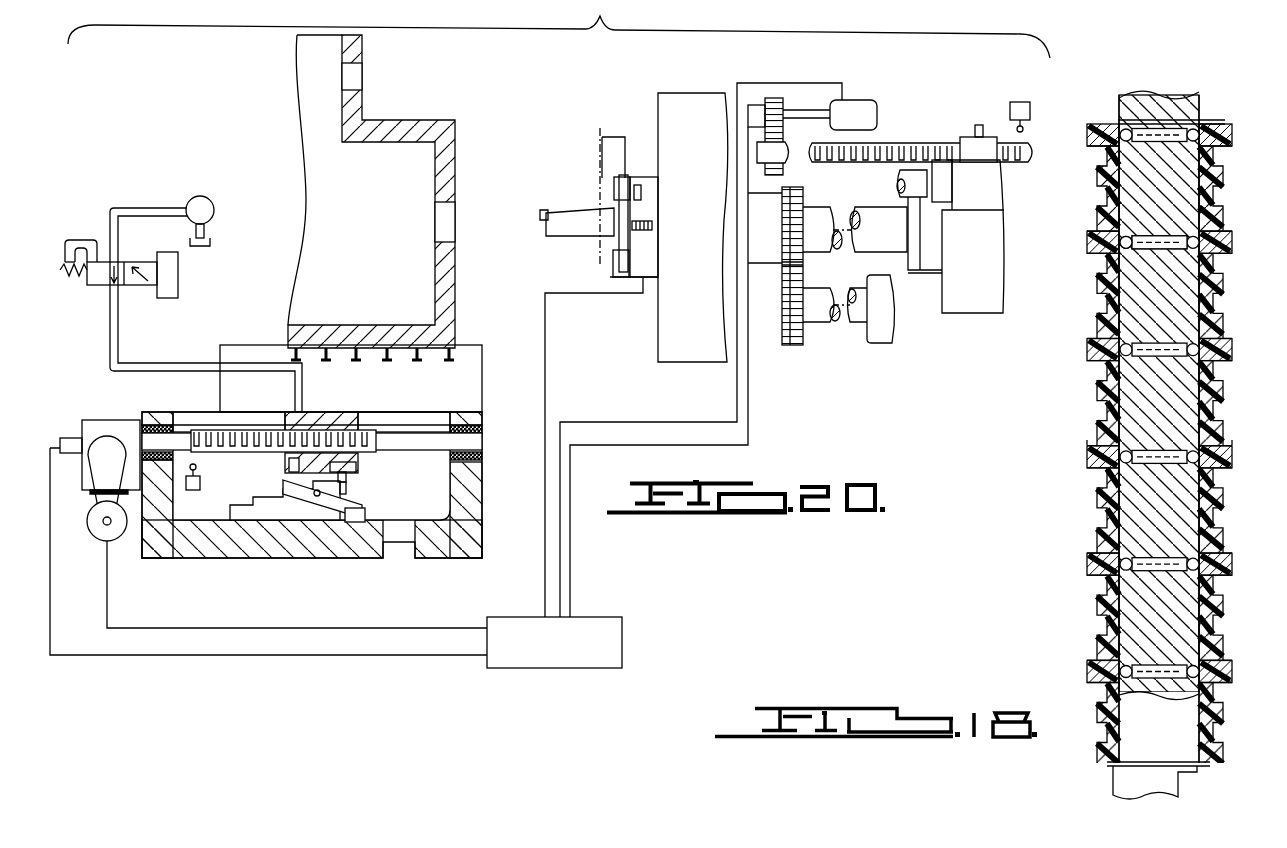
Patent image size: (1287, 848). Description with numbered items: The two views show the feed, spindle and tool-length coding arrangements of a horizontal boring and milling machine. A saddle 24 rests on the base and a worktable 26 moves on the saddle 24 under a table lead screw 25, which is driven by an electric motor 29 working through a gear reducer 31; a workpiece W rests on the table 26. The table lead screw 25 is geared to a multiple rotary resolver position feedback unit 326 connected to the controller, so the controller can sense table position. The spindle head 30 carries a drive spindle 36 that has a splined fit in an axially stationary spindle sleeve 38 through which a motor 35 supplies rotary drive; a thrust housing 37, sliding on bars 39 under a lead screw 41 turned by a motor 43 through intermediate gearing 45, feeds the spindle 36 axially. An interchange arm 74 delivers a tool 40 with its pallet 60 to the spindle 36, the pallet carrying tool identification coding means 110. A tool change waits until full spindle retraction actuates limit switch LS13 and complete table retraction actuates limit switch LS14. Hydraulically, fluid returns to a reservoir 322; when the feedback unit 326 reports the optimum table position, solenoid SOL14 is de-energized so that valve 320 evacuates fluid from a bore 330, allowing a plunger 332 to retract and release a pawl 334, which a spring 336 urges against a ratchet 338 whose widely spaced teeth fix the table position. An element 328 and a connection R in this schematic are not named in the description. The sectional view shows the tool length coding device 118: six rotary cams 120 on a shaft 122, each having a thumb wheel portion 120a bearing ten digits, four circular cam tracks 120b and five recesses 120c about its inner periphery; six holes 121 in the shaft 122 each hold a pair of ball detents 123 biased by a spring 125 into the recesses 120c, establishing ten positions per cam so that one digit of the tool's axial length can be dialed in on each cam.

In FIG. 20, the workpiece W is at (403, 135).
In FIG. 20, the return line R is at (66, 244).
In FIG. 20, the reservoir 322 is at (208, 244).
In FIG. 20, the solenoid SOL14 is at (178, 278).
In FIG. 20, the valve 320 is at (96, 292).
In FIG. 20, the multiple rotary resolver position feedback unit 326 is at (68, 438).
In FIG. 20, the gear reducer 31 is at (115, 420).
In FIG. 20, the electric motor 29 is at (100, 530).
In FIG. 20, the limit switch LS14 is at (193, 490).
In FIG. 20, the ratchet 338 is at (272, 522).
In FIG. 20, the pawl 334 is at (307, 497).
In FIG. 20, the plunger 332 is at (285, 477).
In FIG. 20, the spring 336 is at (346, 482).
In FIG. 20, the bore 330 is at (318, 412).
In FIG. 20, the table lead screw 25 is at (376, 430).
In FIG. 20, the saddle 24 is at (468, 488).
In FIG. 20, the worktable 26 is at (472, 380).
In FIG. 20, the interchange arm 74 is at (615, 100).
In FIG. 20, the drive spindle 36 is at (615, 178).
In FIG. 20, the tool 40 is at (583, 240).
In FIG. 20, the pallet 60 is at (642, 212).
In FIG. 20, the tool identification coding means 110 is at (652, 229).
In FIG. 20, the spindle sleeve 38 is at (648, 272).
In FIG. 20, the spindle head 30 is at (660, 347).
In FIG. 20, the pinion 328 is at (757, 106).
In FIG. 20, the intermediate gearing 45 is at (758, 152).
In FIG. 20, the motor 43 is at (868, 100).
In FIG. 20, the lead screw 41 is at (912, 142).
In FIG. 20, the thrust housing 37 is at (966, 300).
In FIG. 20, the bars 39 is at (898, 182).
In FIG. 20, the motor 35 is at (885, 343).
In FIG. 20, the limit switch LS13 is at (1022, 101).
In FIG. 20, the element controller is at (554, 642).
In FIG. 18, the shaft 122 is at (1183, 605).
In FIG. 18, the recesses 120c is at (1190, 132).
In FIG. 18, the circular thumb wheel portion 120a is at (1232, 452).
In FIG. 18, the rotary cams 120 is at (1228, 472).
In FIG. 18, the circular cam tracks 120b is at (1228, 518).
In FIG. 18, the tool length coding device 118 is at (1233, 372).
In FIG. 18, the holes 121 is at (1160, 252).
In FIG. 18, the ball detents 123 is at (1202, 246).
In FIG. 18, the spring 125 is at (1180, 240).